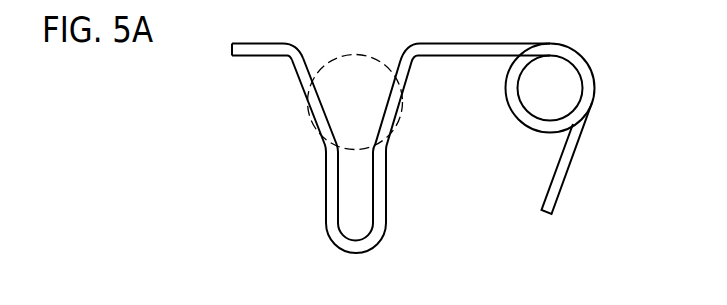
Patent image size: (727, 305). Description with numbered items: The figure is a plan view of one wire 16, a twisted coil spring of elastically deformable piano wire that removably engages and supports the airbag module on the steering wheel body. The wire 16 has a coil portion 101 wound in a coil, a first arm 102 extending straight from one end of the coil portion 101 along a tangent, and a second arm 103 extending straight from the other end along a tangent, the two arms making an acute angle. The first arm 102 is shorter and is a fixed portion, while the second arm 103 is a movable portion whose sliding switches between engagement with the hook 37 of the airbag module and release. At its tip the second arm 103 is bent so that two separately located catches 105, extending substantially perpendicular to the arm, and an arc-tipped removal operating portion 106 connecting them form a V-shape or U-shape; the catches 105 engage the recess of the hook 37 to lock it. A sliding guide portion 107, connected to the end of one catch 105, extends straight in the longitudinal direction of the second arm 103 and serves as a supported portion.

The wire 16 is at (252, 62).
The hook 37 is at (357, 53).
The coil portion 101 is at (578, 47).
The first arm 102 is at (562, 188).
The second arm 103 is at (490, 43).
The catch 105 is at (317, 109).
The removal operating portion 106 is at (335, 228).
The sliding guide portion 107 is at (268, 43).